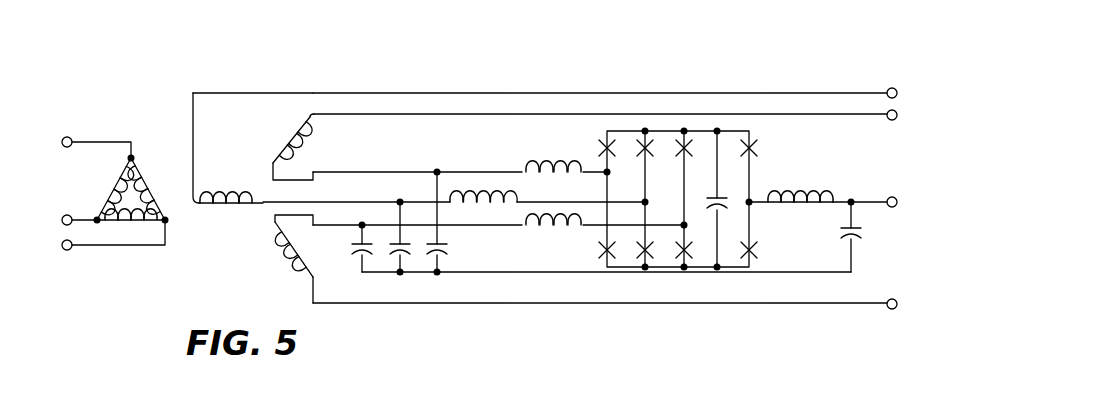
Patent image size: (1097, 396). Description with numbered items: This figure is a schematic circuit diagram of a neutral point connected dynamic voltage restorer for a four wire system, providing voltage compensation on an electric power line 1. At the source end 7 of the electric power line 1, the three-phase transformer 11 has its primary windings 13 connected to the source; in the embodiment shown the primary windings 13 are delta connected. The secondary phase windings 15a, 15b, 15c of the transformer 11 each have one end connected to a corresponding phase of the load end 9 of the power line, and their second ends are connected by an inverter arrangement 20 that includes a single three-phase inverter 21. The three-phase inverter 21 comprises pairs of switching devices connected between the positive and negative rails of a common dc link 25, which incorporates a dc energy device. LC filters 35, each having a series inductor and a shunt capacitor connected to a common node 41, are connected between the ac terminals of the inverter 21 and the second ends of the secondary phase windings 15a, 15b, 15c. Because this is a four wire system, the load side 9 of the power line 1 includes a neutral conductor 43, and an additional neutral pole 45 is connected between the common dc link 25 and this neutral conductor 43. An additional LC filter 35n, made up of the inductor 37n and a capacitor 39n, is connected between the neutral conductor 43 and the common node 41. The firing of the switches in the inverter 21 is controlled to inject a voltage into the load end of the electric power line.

The source end 7 is at (100, 128).
The three-phase transformer 11 is at (157, 128).
The primary windings 13 is at (127, 260).
The secondary phase winding 15a is at (228, 211).
The secondary phase winding 15b is at (283, 145).
The secondary phase winding 15c is at (290, 248).
The electric power line 1 is at (386, 75).
The LC filter 35 is at (448, 137).
The common node 41 is at (440, 274).
The inverter arrangement 20 is at (690, 81).
The three-phase inverter 21 is at (663, 122).
The common dc link 25 is at (736, 100).
The load end 9 is at (839, 70).
The neutral pole 45 is at (758, 174).
The inductor 37n is at (793, 192).
The additional LC filter 35n is at (837, 180).
The capacitor 39n is at (838, 240).
The neutral conductor 43 is at (870, 207).